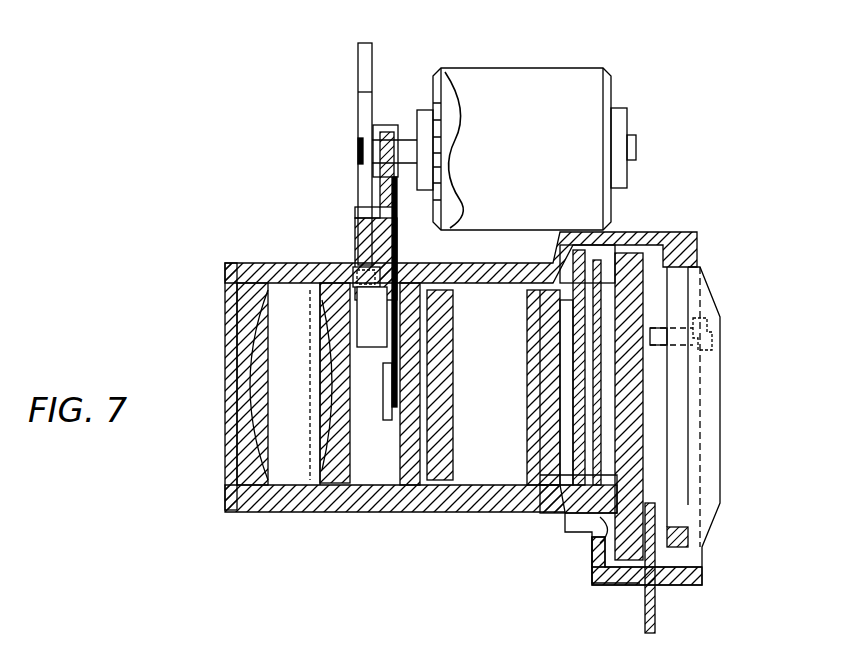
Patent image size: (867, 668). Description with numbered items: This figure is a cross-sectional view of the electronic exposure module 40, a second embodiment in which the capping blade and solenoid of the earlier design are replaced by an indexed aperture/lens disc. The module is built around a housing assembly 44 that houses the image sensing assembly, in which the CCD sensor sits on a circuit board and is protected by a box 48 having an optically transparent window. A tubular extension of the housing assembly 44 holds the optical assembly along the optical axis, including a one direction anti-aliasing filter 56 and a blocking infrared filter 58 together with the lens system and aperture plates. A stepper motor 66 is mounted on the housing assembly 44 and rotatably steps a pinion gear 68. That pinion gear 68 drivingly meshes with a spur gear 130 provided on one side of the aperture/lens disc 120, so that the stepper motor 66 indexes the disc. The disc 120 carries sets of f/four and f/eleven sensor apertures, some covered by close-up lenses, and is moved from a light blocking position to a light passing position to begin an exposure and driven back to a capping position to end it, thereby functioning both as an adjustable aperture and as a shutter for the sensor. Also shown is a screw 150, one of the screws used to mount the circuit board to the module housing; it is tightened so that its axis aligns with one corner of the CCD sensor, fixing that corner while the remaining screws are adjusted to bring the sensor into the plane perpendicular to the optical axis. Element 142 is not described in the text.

The electronic exposure module 40 is at (240, 132).
The housing assembly 44 is at (700, 252).
The box 48 is at (603, 500).
The one direction anti-aliasing filter 56 is at (550, 470).
The blocking infrared filter 58 is at (530, 458).
The stepper motor 66 is at (587, 98).
The pinion gear 68 is at (358, 50).
The aperture/lens disc 120 is at (357, 243).
The spur gear 130 is at (367, 213).
The cover plate 142 is at (620, 392).
The screw 150 is at (720, 330).